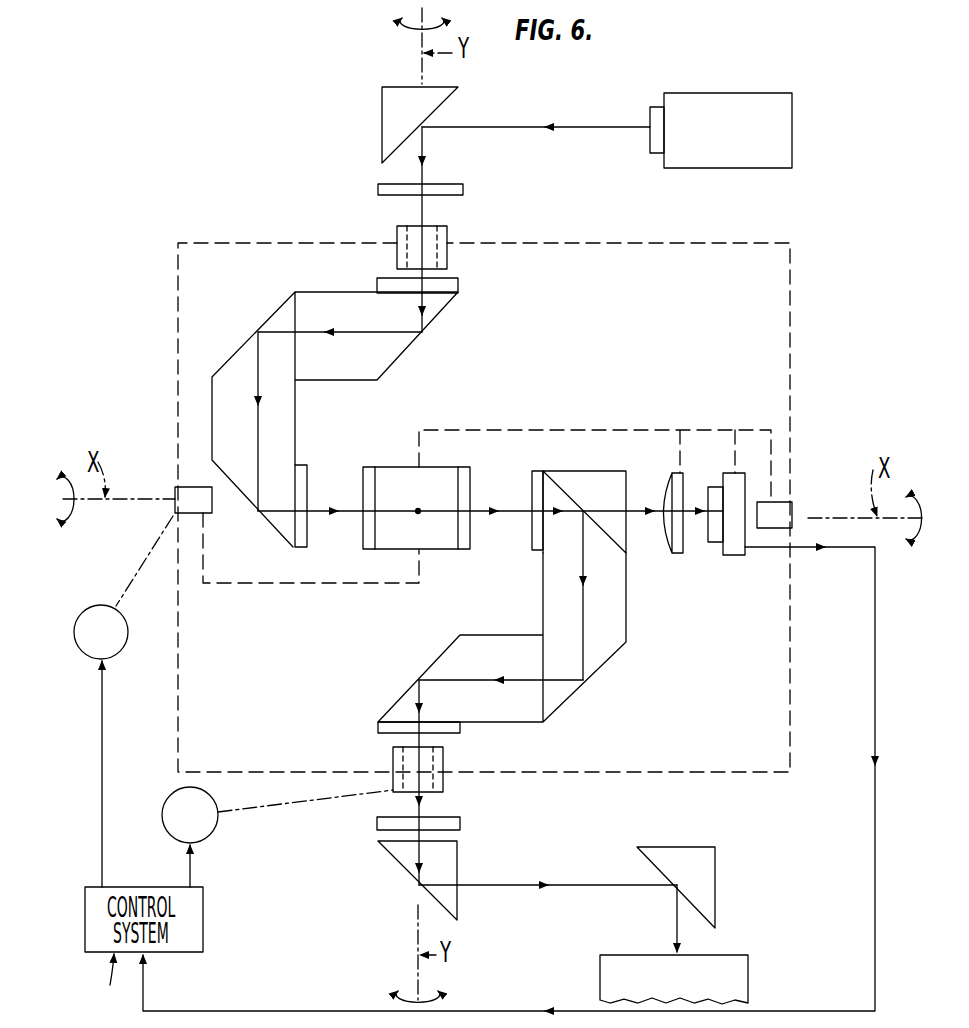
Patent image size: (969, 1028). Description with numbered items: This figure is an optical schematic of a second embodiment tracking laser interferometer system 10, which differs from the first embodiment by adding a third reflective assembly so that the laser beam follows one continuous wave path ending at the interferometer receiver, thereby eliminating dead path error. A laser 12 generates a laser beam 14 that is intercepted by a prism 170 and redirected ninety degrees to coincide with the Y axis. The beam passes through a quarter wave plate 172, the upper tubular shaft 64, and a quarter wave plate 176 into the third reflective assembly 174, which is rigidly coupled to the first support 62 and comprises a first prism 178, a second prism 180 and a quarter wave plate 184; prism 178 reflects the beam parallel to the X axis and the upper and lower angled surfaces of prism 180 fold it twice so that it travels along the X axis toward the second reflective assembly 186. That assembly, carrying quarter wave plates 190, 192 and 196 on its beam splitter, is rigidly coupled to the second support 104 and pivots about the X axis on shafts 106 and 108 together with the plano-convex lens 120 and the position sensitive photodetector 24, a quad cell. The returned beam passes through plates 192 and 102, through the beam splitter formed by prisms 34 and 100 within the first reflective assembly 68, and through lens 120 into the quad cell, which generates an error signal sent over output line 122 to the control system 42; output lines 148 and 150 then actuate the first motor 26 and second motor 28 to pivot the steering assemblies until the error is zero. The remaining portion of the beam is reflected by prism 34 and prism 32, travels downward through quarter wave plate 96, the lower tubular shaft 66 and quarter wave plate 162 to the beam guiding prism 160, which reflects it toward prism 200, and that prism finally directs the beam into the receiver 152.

The tracking laser interferometer system 10 is at (243, 130).
The laser 12 is at (770, 93).
The laser beam 14 is at (552, 127).
The prism 170 is at (382, 102).
The quarter wave plate 172 is at (378, 188).
The upper tubular shaft 64 is at (452, 228).
The first support 62 is at (752, 252).
The quarter wave plate 176 is at (458, 284).
The third reflective assembly 174 is at (462, 330).
The first prism 178 is at (400, 359).
The second prism 180 is at (297, 405).
The quarter wave plate 184 is at (306, 466).
The second reflective assembly 186 is at (438, 558).
The quarter wave plate 190 is at (396, 470).
The quarter wave plate 192 is at (470, 470).
The quarter wave plate 196 is at (364, 549).
The upper coated mirrored prism 100 is at (603, 471).
The quarter wave plate 102 is at (536, 470).
The second support 104 is at (656, 428).
The shaft 106 is at (187, 485).
The right side shaft 108 is at (783, 500).
The plano-convex lens 120 is at (674, 554).
The position sensitive photodetector 24 is at (715, 544).
The quad cell quad is at (733, 556).
The second prism 34 is at (627, 625).
The first reflective assembly 68 is at (632, 683).
The first prism 32 is at (500, 722).
The quarter wave plate 96 is at (378, 727).
The lower tubular shaft 66 is at (447, 786).
The quarter wave plate 162 is at (460, 825).
The beam guiding prism 160 is at (382, 860).
The prism 200 is at (715, 868).
The receiver 152 is at (732, 955).
The output line 122 is at (876, 634).
The second motor 28 is at (121, 652).
The first motor 26 is at (170, 836).
The second output line 150 is at (103, 739).
The first output line 148 is at (191, 878).
The control system 42 is at (97, 980).